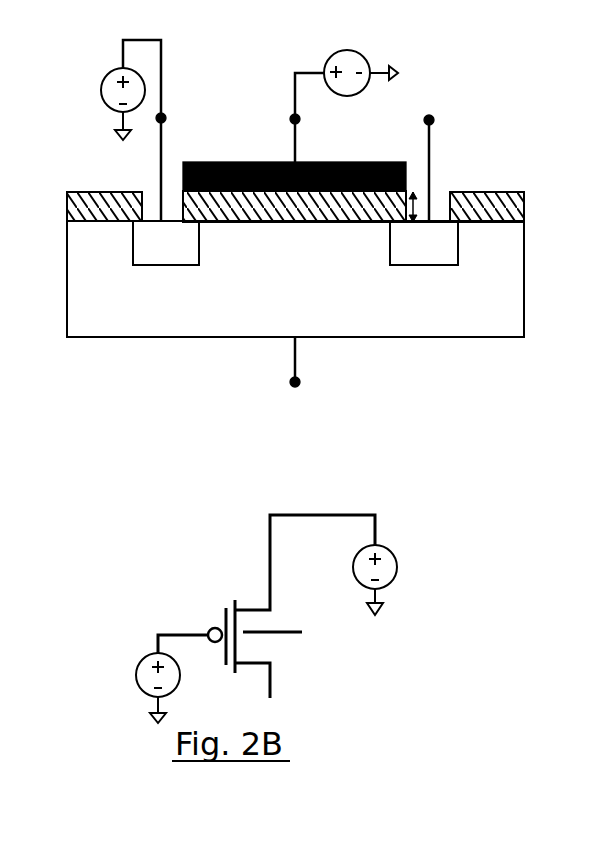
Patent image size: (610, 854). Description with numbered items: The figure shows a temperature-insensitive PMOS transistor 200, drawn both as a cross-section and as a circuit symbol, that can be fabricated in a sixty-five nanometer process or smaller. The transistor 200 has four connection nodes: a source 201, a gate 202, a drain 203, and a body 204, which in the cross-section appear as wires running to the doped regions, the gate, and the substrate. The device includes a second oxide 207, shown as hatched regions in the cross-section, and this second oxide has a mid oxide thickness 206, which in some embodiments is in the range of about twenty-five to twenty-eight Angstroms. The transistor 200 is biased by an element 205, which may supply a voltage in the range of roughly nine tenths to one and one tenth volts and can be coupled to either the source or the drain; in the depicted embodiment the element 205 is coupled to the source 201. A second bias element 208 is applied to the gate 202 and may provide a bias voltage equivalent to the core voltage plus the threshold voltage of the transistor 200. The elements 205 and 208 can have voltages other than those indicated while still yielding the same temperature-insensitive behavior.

The transistor 200 is at (600, 78).
The source connection node 201 is at (161, 142).
The gate connection node 202 is at (292, 128).
The drain connection node 203 is at (427, 142).
The body connection node 204 is at (295, 365).
The bias element 205 is at (100, 86).
The mid oxide thickness 206 is at (415, 199).
The second oxide 207 is at (183, 196).
The second bias element 208 is at (336, 52).